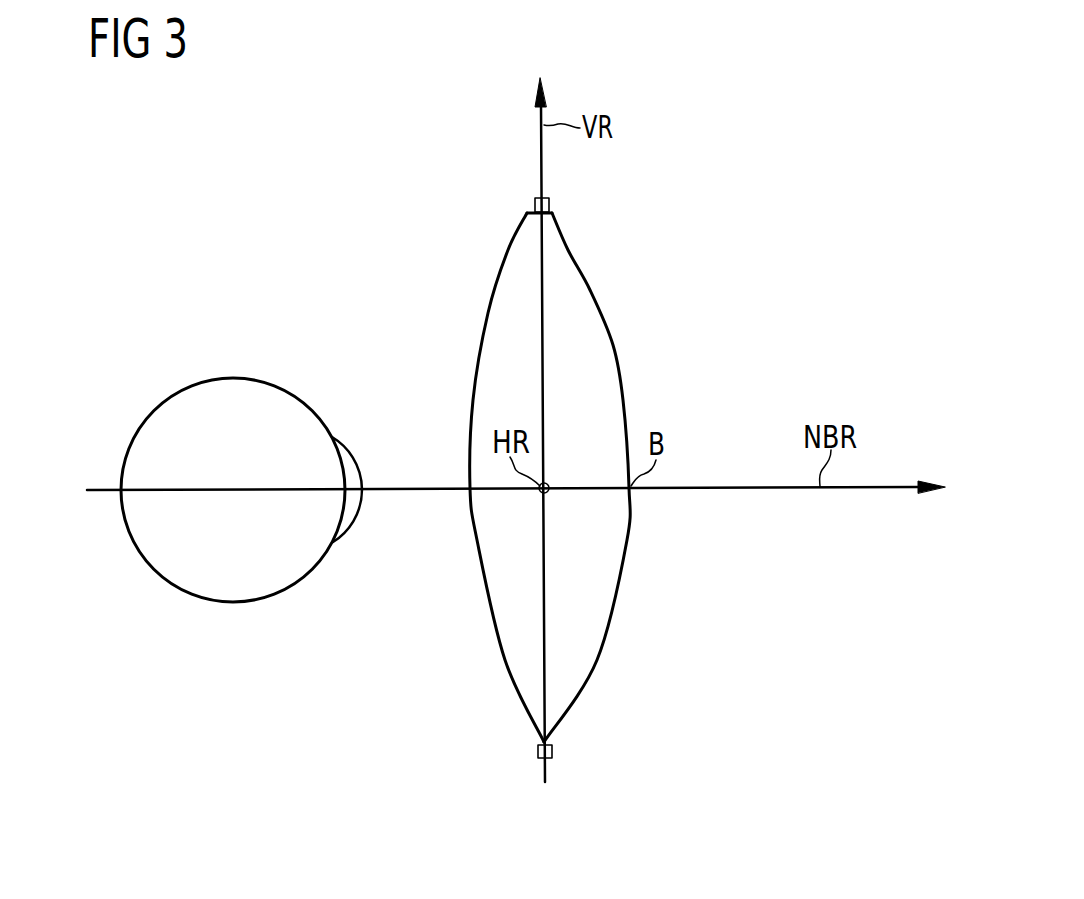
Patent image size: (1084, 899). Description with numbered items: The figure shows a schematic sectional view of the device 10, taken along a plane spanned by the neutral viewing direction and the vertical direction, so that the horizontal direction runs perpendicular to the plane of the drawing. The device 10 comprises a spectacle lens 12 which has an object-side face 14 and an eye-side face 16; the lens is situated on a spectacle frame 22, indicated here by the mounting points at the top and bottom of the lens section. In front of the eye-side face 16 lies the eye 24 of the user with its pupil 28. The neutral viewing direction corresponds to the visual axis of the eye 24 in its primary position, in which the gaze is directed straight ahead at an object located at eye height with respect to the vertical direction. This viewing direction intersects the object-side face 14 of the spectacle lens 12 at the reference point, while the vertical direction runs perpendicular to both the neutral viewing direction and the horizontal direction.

The device 10 is at (782, 183).
The spectacle lens 12 is at (556, 477).
The object-side face 14 is at (613, 345).
The eye-side face 16 is at (488, 313).
The spectacle frame 22 is at (536, 200).
The eye 24 is at (273, 579).
The pupil 28 is at (354, 500).